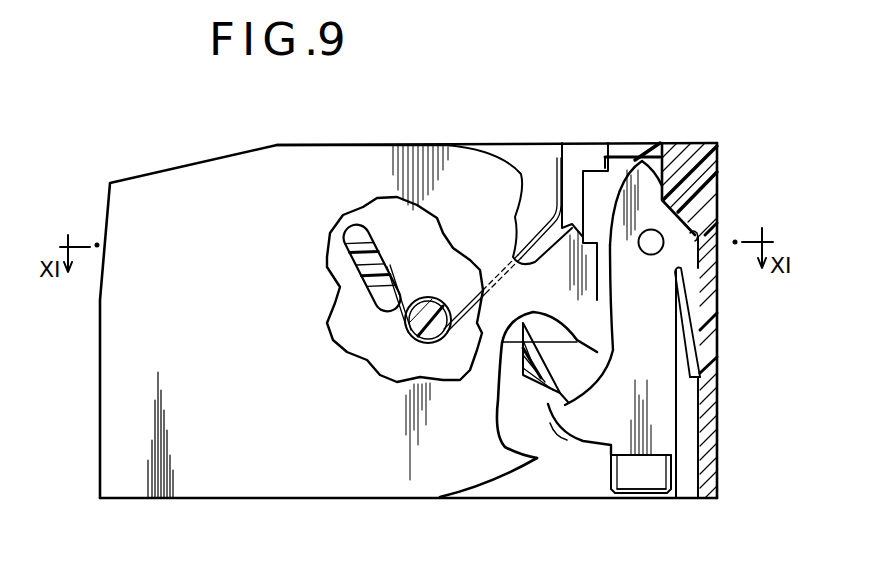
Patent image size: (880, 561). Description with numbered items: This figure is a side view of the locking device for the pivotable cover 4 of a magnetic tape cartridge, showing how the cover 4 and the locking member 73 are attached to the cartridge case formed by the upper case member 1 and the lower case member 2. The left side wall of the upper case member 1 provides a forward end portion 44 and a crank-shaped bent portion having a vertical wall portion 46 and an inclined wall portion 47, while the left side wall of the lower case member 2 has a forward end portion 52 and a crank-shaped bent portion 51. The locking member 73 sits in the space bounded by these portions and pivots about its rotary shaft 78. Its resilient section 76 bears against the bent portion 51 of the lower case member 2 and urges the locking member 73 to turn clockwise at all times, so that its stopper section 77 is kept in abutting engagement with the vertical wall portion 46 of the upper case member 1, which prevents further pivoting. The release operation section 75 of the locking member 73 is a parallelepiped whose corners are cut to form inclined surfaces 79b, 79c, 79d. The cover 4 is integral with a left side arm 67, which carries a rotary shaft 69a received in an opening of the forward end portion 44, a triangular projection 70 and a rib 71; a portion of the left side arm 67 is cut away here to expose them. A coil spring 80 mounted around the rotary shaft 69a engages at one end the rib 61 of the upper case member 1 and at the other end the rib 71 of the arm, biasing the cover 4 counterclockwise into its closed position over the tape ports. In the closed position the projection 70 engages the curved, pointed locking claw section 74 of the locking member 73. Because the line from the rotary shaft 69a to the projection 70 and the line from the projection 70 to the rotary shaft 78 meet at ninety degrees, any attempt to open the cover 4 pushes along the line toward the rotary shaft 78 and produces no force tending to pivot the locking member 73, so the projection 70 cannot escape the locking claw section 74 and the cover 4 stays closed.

The upper case member 1 is at (715, 143).
The lower case member 2 is at (706, 494).
The pivotable cover 4 is at (108, 345).
The forward end portion 44 is at (507, 160).
The vertical wall portion 46 is at (652, 151).
The inclined wall portion 47 is at (705, 230).
The bent portion 51 is at (700, 403).
The forward end portion 52 is at (527, 482).
The rib 61 is at (580, 160).
The left side arm 67 is at (334, 160).
The rotary shaft 69a is at (418, 335).
The triangular projection 70 is at (522, 362).
The rib 71 is at (383, 249).
The locking member 73 is at (580, 425).
The locking claw section 74 is at (562, 397).
The release operation section 75 is at (626, 480).
The resilient section 76 is at (700, 342).
The stopper section 77 is at (617, 154).
The rotary shaft 78 is at (664, 250).
The inclined surface 79b is at (642, 492).
The inclined surface 79c is at (611, 473).
The inclined surface 79d is at (670, 470).
The coil spring 80 is at (533, 232).